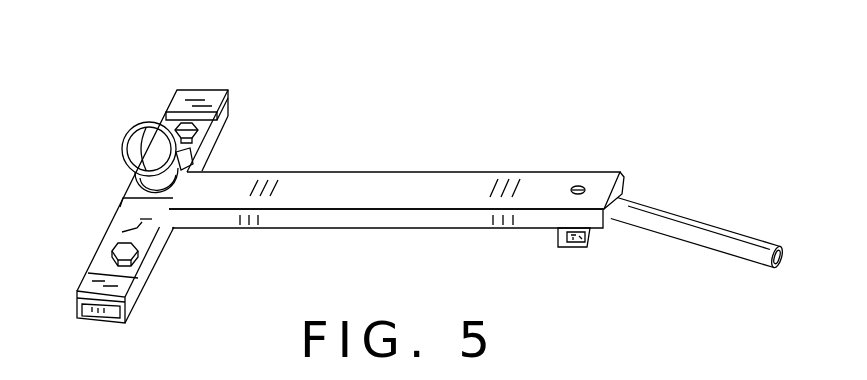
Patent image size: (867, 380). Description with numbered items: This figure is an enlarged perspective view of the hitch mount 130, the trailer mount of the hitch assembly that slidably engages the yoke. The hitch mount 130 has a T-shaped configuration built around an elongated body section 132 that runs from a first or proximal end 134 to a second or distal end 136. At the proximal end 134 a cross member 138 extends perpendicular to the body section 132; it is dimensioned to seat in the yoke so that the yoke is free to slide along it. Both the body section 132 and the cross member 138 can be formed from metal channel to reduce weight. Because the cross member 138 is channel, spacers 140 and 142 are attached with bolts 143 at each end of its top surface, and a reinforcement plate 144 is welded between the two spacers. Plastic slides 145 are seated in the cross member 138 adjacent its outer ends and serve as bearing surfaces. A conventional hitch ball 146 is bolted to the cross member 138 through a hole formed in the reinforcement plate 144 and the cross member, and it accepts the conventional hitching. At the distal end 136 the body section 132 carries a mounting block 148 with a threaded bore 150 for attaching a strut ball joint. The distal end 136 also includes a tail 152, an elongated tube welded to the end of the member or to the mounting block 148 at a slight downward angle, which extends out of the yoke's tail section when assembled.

The hitch mount 130 is at (357, 157).
The elongated body section 132 is at (378, 217).
The proximal end 134 is at (122, 190).
The distal end 136 is at (618, 171).
The cross member 138 is at (231, 117).
The spacer 140 is at (207, 97).
The spacer 142 is at (137, 230).
The bolts 143 is at (185, 126).
The reinforcement plate 144 is at (195, 166).
The plastic slides 145 is at (102, 316).
The hitch ball 146 is at (155, 145).
The mounting block 148 is at (558, 236).
The threaded bore 150 is at (580, 248).
The tail 152 is at (663, 222).